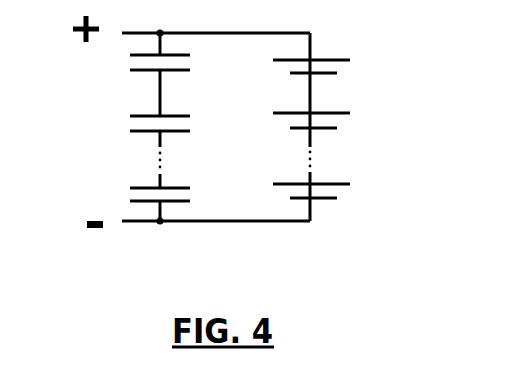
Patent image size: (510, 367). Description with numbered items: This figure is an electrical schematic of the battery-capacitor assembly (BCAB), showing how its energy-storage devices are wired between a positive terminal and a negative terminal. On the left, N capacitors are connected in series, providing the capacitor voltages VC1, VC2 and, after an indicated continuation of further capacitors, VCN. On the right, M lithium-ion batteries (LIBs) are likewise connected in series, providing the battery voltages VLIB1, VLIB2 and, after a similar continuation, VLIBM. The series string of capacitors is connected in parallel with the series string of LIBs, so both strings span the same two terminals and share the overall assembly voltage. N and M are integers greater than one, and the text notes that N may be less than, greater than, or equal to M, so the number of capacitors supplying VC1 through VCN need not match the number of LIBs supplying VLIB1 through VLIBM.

The voltage of the first capacitor VC1 is at (141, 85).
The voltage of the second capacitor VC2 is at (136, 128).
The voltage of the Nth capacitor VCN is at (135, 191).
The voltage of the first lithium-ion battery VLIB1 is at (345, 85).
The voltage of the second lithium-ion battery VLIB2 is at (344, 128).
The voltage of the Mth lithium-ion battery VLIBM is at (345, 191).